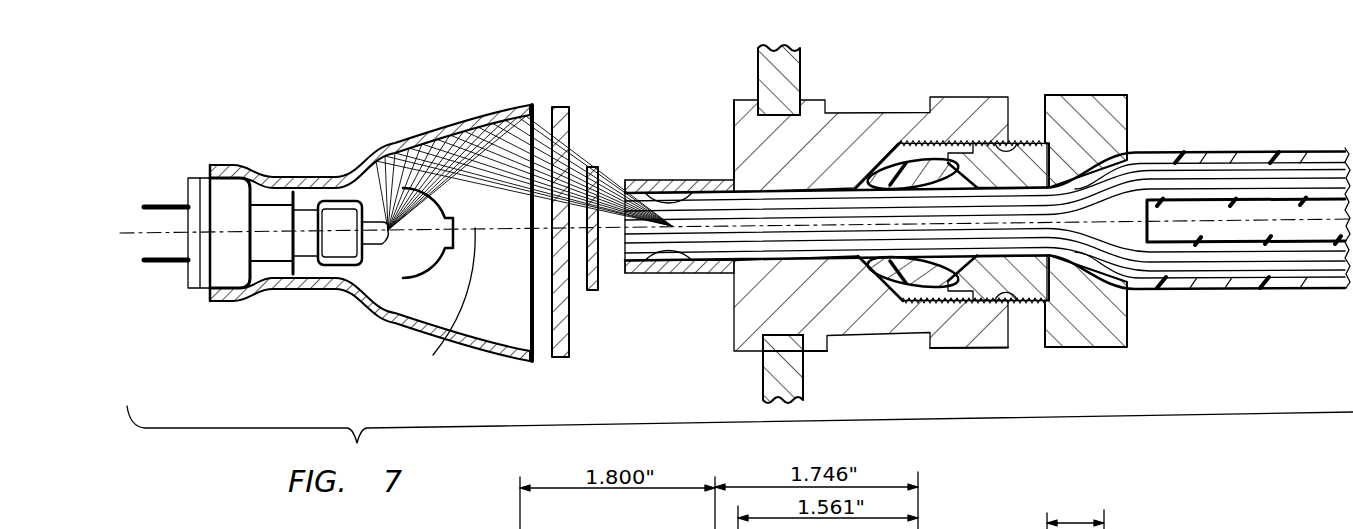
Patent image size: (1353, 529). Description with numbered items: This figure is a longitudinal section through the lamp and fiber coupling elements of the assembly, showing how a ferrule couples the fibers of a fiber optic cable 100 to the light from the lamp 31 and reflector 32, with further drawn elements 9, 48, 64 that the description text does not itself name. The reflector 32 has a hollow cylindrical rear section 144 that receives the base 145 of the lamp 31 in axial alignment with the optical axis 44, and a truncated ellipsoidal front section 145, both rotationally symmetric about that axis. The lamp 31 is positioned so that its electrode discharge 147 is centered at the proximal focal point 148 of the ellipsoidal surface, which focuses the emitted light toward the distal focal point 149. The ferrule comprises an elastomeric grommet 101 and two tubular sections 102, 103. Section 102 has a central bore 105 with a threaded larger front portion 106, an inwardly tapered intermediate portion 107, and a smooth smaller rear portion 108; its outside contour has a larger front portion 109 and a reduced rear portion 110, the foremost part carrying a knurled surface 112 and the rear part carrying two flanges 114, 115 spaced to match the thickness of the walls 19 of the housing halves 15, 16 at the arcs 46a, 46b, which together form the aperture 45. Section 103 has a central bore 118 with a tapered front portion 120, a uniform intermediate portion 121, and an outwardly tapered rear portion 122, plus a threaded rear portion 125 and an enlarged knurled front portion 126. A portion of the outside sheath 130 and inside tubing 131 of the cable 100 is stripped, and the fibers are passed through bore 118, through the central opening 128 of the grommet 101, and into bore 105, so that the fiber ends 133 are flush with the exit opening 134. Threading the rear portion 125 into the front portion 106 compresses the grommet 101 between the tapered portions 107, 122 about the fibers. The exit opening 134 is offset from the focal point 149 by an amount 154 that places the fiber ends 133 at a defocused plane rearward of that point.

The optical fibers 9 is at (1312, 178).
The housing half 15 is at (790, 55).
The bottom housing half 16 is at (804, 388).
The walls 19 is at (763, 382).
The lamp 31 is at (224, 272).
The reflector 32 is at (399, 141).
The optical axis 44 is at (446, 304).
The aperture 45 is at (768, 330).
The arc 46a is at (810, 123).
The arc 46b is at (815, 336).
The filter 48 is at (571, 110).
The lens 64 is at (593, 157).
The fiber optic cable 100 is at (1194, 292).
The grommet 101 is at (938, 170).
The ferrule section 102 is at (900, 337).
The ferrule section 103 is at (1115, 95).
The central bore 105 is at (667, 195).
The threaded front portion 106 is at (1018, 132).
The tapered intermediate portion 107 is at (900, 160).
The rear portion 108 is at (685, 258).
The front portion 109 is at (925, 160).
The rear portion 110 is at (640, 178).
The knurled outer surface 112 is at (970, 352).
The flange 114 is at (846, 100).
The flange 115 is at (752, 100).
The central bore 118 is at (1150, 268).
The tapered front portion 120 is at (1157, 158).
The intermediate portion 121 is at (1020, 262).
The tapered rear portion 122 is at (918, 290).
The threaded rear portion 125 is at (1028, 142).
The enlarged front portion 126 is at (1075, 350).
The central opening 128 is at (930, 170).
The outside sheath 130 is at (1223, 155).
The inside tubing 131 is at (1253, 242).
The fiber ends 133 is at (628, 250).
The exit opening 134 is at (627, 262).
The rear section 144 is at (285, 285).
The front section 145 is at (197, 280).
The electrode discharge 147 is at (378, 293).
The proximal focal point 148 is at (427, 278).
The distal focal point 149 is at (678, 198).
The amount 154 is at (1066, 522).